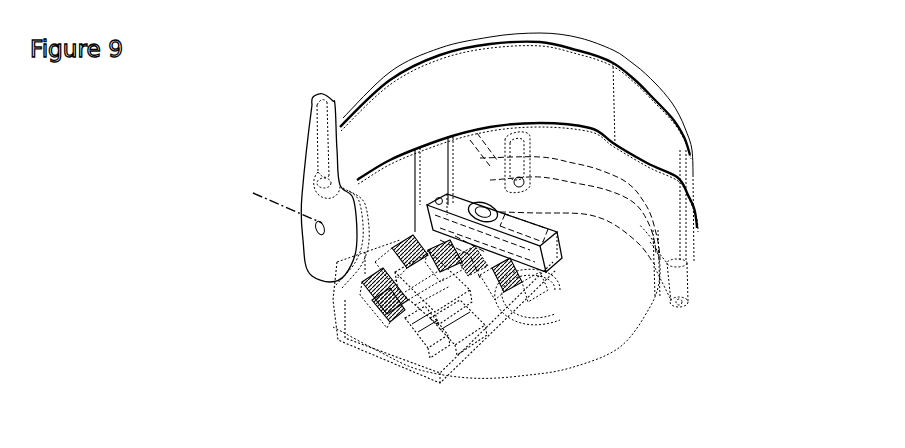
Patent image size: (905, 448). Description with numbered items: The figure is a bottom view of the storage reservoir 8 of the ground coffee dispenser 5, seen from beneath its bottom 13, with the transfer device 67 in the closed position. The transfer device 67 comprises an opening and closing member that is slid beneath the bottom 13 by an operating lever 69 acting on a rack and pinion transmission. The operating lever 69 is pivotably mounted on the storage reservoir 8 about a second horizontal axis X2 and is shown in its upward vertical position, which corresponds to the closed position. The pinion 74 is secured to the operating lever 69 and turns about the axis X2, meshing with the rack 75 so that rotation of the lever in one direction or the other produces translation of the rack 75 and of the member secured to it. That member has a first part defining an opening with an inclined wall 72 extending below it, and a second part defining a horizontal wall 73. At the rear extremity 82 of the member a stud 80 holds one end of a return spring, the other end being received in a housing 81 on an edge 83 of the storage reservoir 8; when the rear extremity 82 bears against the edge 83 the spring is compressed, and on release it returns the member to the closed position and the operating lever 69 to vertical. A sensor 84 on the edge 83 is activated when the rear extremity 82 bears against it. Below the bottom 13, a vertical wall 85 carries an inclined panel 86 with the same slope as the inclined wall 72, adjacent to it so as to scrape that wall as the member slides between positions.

The ground coffee dispenser 5 is at (790, 62).
The storage reservoir 8 is at (688, 172).
The bottom 13 is at (620, 325).
The operating lever 69 is at (302, 118).
The second horizontal axis X2 is at (266, 200).
The transfer device 67 is at (357, 334).
The inclined wall 72 is at (400, 340).
The horizontal wall 73 is at (463, 300).
The pinion 74 is at (373, 273).
The rack 75 is at (357, 307).
The stud 80 is at (437, 258).
The housing 81 is at (490, 213).
The rear extremity 82 is at (453, 272).
The edge 83 is at (533, 250).
The sensor 84 is at (520, 223).
The vertical wall 85 is at (447, 338).
The inclined panel 86 is at (430, 332).